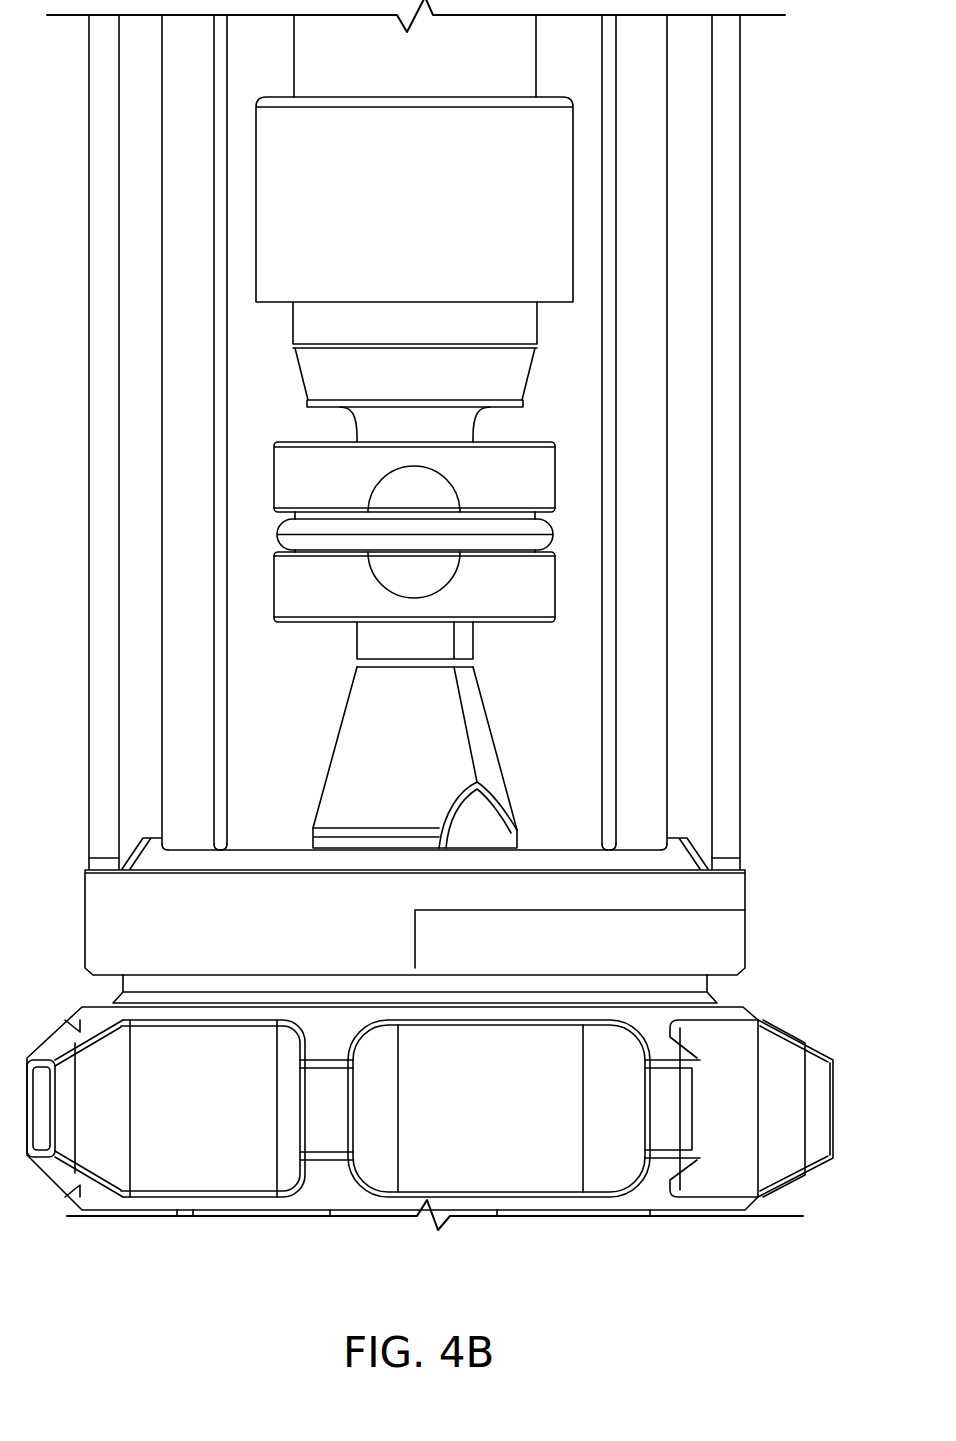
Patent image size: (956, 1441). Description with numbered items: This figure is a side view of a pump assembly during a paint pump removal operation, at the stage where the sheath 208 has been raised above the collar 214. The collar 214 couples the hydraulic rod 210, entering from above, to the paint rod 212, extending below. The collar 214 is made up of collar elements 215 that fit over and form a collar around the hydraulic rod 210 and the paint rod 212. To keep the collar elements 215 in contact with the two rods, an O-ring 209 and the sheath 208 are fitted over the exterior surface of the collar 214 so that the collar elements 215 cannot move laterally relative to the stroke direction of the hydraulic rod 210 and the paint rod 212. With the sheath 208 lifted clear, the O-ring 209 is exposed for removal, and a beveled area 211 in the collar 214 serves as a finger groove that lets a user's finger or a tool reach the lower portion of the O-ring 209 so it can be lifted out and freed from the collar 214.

The sheath 208 is at (417, 190).
The O-ring 209 is at (527, 523).
The hydraulic rod 210 is at (416, 61).
The beveled area 211 is at (417, 502).
The paint rod 212 is at (412, 774).
The collar 214 is at (557, 510).
The collar elements 215 is at (513, 480).